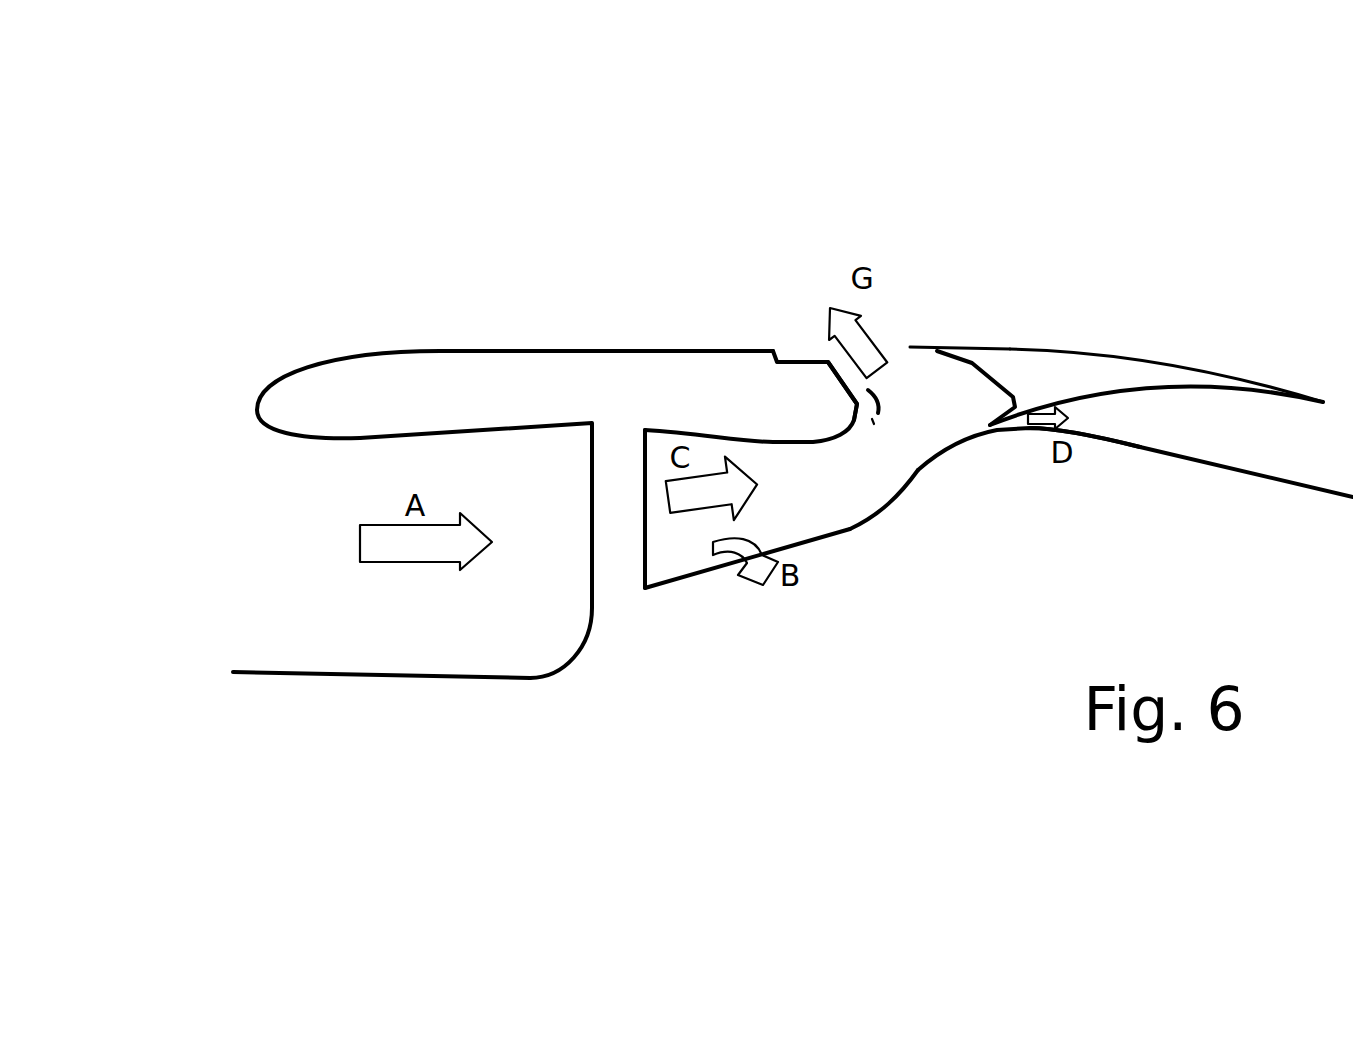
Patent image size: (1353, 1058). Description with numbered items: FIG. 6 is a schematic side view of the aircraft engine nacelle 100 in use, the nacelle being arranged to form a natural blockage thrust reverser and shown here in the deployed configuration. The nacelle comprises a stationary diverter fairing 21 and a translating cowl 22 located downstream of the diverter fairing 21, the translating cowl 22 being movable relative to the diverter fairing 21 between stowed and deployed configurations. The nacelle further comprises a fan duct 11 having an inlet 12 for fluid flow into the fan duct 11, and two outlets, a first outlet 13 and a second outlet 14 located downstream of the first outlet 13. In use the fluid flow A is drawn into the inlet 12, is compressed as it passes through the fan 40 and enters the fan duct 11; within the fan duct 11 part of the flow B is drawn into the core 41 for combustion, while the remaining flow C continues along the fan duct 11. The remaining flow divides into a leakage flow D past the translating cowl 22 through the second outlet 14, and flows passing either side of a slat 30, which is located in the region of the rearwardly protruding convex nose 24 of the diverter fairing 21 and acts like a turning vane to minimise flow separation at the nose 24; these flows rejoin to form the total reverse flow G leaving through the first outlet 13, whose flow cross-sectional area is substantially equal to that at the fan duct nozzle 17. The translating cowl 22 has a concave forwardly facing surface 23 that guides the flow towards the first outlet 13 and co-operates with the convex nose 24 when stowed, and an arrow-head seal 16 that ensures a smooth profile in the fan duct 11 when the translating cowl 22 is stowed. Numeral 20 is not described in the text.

The aircraft engine nacelle 100 is at (235, 352).
The fan cowl / nacelle 20 is at (563, 392).
The diverter fairing 21 is at (653, 388).
The convex nose 24 is at (840, 408).
The inlet 12 is at (293, 630).
The engine fan 40 is at (626, 556).
The fan duct 11 is at (685, 555).
The core 41 is at (833, 562).
The slat 30 is at (877, 415).
The arrow-head seal 16 is at (1000, 433).
The fan duct nozzle 17 is at (1283, 448).
The first outlet 13 is at (898, 343).
The translating cowl 22 is at (1057, 363).
The concave forwardly facing surface 23 is at (997, 373).
The second outlet 14 is at (1128, 413).